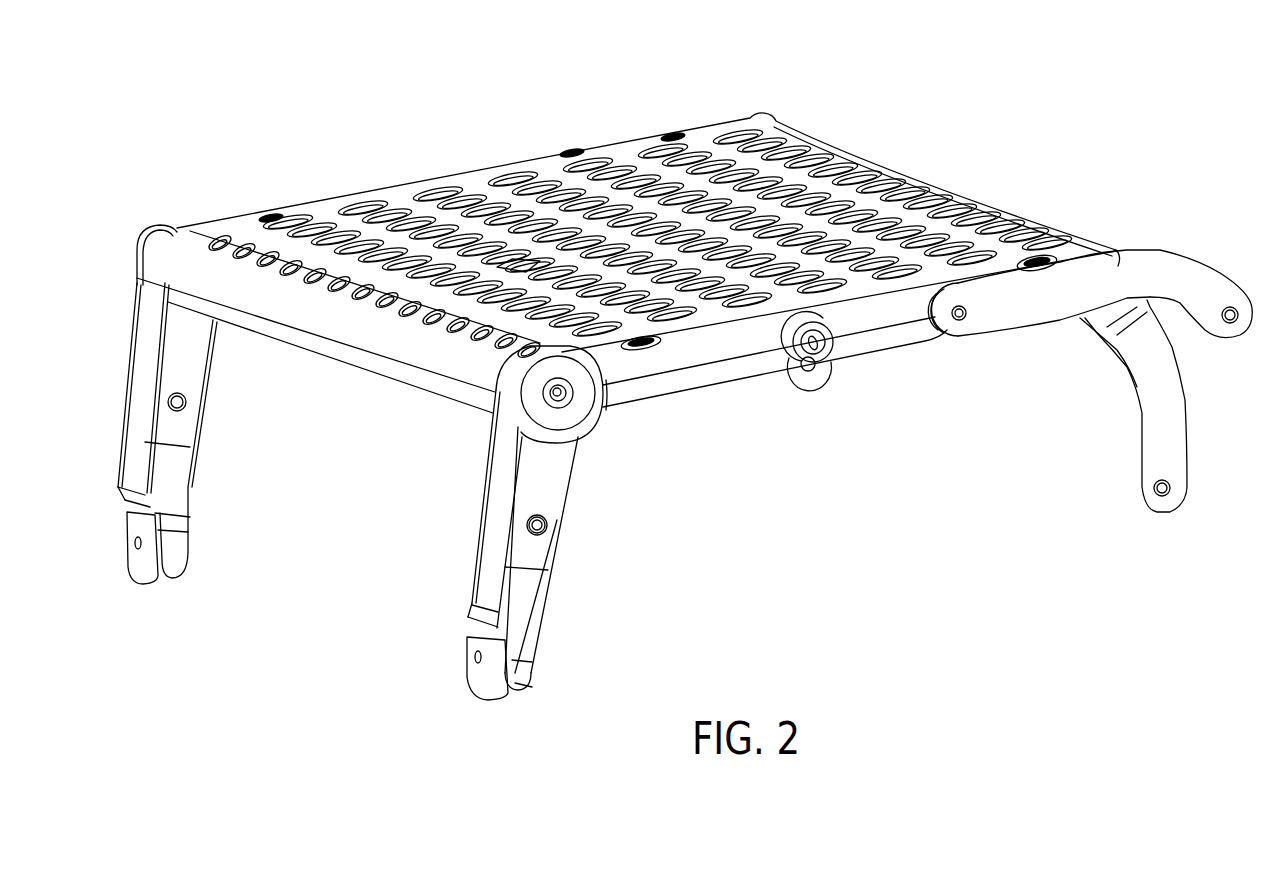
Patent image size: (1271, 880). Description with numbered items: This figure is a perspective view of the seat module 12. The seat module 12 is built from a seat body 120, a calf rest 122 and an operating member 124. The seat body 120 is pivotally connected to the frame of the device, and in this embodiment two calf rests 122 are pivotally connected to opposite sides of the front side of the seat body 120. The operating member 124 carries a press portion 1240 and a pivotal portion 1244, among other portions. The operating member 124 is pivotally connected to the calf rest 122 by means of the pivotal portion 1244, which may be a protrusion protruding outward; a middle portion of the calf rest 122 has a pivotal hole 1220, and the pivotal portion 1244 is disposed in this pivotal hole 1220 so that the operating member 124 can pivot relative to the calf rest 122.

The seat module 12 is at (342, 96).
The seat body 120 is at (472, 172).
The calf rest 122 is at (482, 540).
The operating member 124 is at (550, 607).
The pivotal hole 1220 is at (548, 532).
The press portion 1240 is at (527, 672).
The pivotal portion 1244 is at (538, 517).